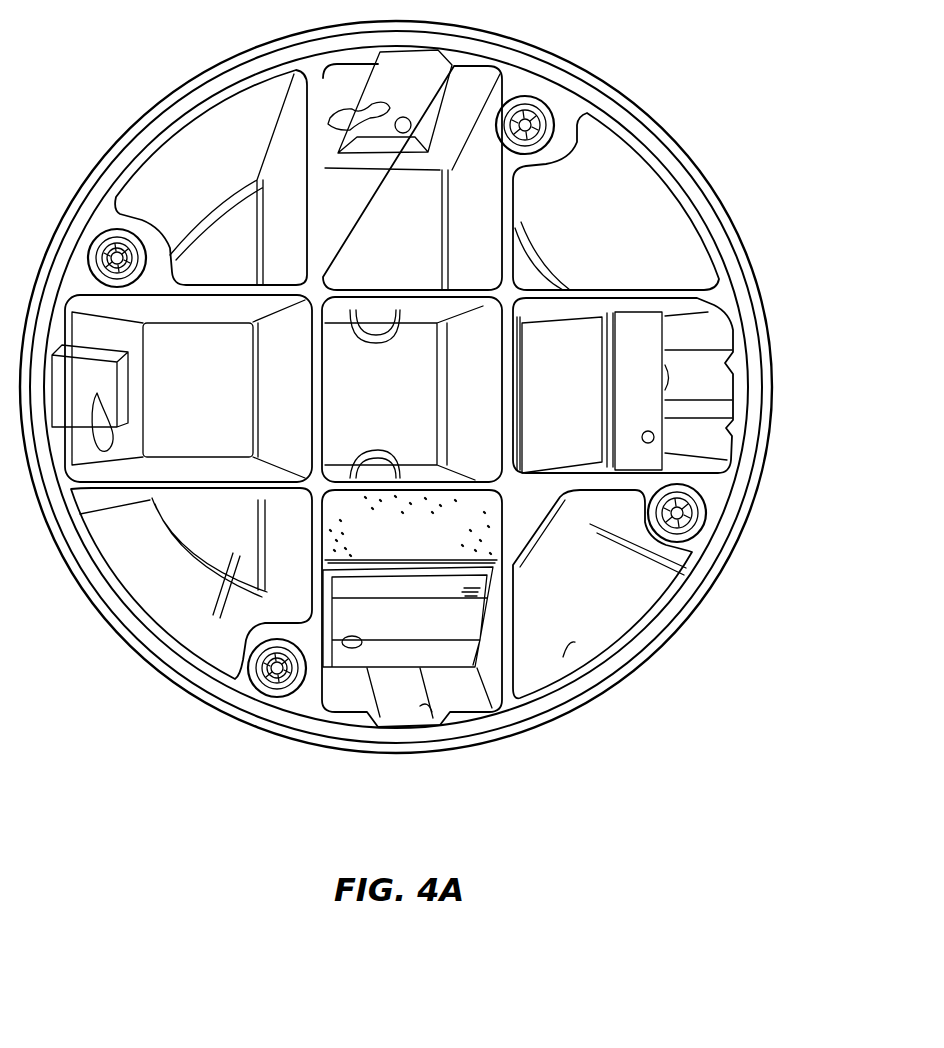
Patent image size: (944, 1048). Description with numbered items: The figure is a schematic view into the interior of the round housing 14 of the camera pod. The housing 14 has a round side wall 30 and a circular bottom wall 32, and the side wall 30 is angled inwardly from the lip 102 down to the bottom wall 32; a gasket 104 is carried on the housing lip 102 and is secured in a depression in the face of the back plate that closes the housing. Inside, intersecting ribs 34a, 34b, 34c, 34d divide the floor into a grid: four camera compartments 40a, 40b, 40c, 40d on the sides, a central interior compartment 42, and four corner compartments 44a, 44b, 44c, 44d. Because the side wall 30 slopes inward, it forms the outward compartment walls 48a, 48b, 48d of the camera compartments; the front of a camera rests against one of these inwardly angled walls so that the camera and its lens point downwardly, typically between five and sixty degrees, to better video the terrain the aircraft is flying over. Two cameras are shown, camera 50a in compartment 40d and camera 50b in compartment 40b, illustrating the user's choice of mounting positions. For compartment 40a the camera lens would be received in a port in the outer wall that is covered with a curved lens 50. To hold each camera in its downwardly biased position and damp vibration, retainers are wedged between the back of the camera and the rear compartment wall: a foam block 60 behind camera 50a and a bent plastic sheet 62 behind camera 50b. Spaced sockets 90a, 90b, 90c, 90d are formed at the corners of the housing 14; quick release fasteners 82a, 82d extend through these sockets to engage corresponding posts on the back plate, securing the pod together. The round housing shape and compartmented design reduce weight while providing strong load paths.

The housing 14 is at (644, 99).
The round side wall 30 is at (575, 642).
The circular bottom wall 32 is at (354, 436).
The rib 34a is at (318, 201).
The rib 34b is at (508, 208).
The rib 34c is at (620, 297).
The rib 34d is at (589, 545).
The camera compartment 40a is at (230, 363).
The camera compartment 40b is at (705, 330).
The camera compartment 40c is at (413, 265).
The camera compartment 40d is at (400, 708).
The interior compartment 42 is at (415, 378).
The corner compartment 44a is at (247, 255).
The corner compartment 44b is at (643, 253).
The corner compartment 44c is at (583, 595).
The corner compartment 44d is at (237, 533).
The outward compartment wall 48a is at (87, 380).
The outward compartment wall 48b is at (712, 390).
The outward compartment wall 48d is at (426, 710).
The curved lens 50 is at (112, 437).
The camera 50a is at (417, 632).
The camera 50b is at (640, 410).
The foam block 60 is at (391, 543).
The bent plastic sheet 62 is at (571, 414).
The fastener 82a is at (97, 258).
The fastener 82d is at (258, 673).
The socket 90a is at (107, 236).
The socket 90b is at (547, 105).
The socket 90c is at (698, 527).
The socket 90d is at (283, 692).
The lip 102 is at (153, 106).
The gasket 104 is at (223, 78).